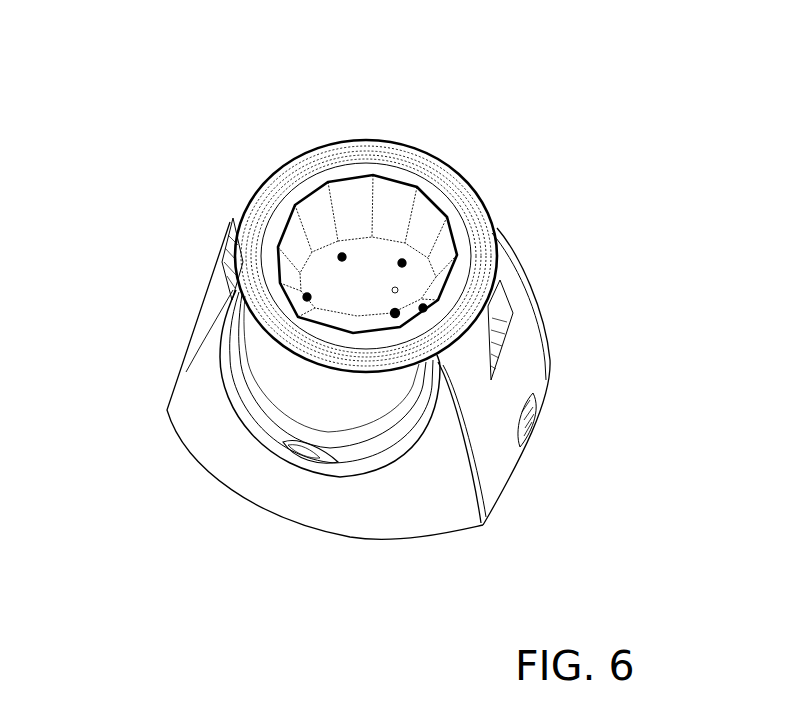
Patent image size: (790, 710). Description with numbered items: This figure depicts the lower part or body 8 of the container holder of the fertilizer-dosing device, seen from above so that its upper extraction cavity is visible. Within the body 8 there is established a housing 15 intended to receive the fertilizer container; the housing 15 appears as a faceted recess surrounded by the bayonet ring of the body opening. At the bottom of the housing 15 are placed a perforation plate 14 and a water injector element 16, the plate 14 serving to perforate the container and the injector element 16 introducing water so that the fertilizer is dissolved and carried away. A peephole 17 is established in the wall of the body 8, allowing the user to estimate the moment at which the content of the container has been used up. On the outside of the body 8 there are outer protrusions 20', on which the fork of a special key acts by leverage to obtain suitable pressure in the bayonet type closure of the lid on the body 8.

The lower part or body 8 is at (203, 365).
The perforation plate 14 is at (372, 257).
The housing 15 is at (353, 205).
The water injector element 16 is at (395, 313).
The peephole 17 is at (297, 455).
The outer protrusions 20' is at (389, 250).